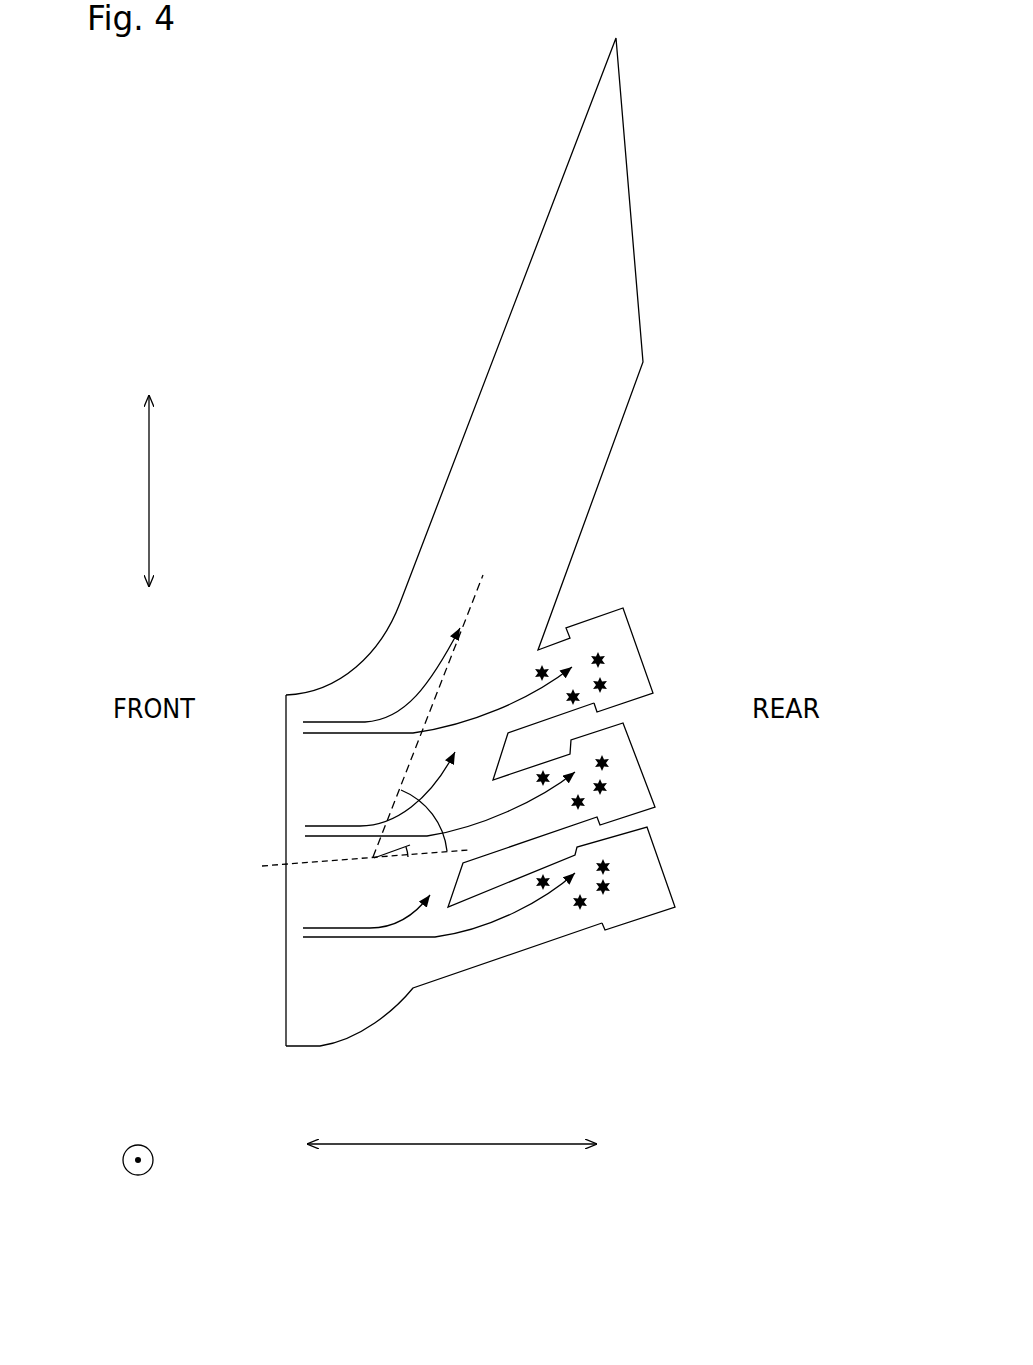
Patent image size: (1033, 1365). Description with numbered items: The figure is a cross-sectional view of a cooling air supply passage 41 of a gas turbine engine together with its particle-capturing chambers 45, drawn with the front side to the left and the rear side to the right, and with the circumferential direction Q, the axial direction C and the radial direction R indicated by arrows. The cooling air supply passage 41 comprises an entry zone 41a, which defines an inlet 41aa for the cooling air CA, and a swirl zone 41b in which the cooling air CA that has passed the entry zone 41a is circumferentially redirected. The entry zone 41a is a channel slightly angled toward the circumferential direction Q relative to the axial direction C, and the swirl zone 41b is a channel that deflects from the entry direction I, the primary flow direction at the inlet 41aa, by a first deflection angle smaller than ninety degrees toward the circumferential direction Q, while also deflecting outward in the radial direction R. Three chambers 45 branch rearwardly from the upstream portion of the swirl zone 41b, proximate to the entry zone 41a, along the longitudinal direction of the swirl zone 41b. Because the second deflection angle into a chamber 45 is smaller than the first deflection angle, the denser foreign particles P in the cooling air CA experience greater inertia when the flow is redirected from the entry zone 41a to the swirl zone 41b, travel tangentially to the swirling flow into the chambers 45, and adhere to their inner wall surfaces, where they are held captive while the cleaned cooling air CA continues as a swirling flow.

The cooling air supply passage 41 is at (377, 640).
The entry zone 41a is at (305, 1034).
The inlet 41aa is at (286, 981).
The swirl zone 41b is at (553, 547).
The chamber 45 is at (538, 721).
The cooling air CA is at (347, 718).
The foreign particles P is at (573, 912).
The entry direction I is at (280, 862).
The circumferential direction Q is at (148, 473).
The axial direction C is at (473, 1146).
The radial direction R is at (153, 1160).